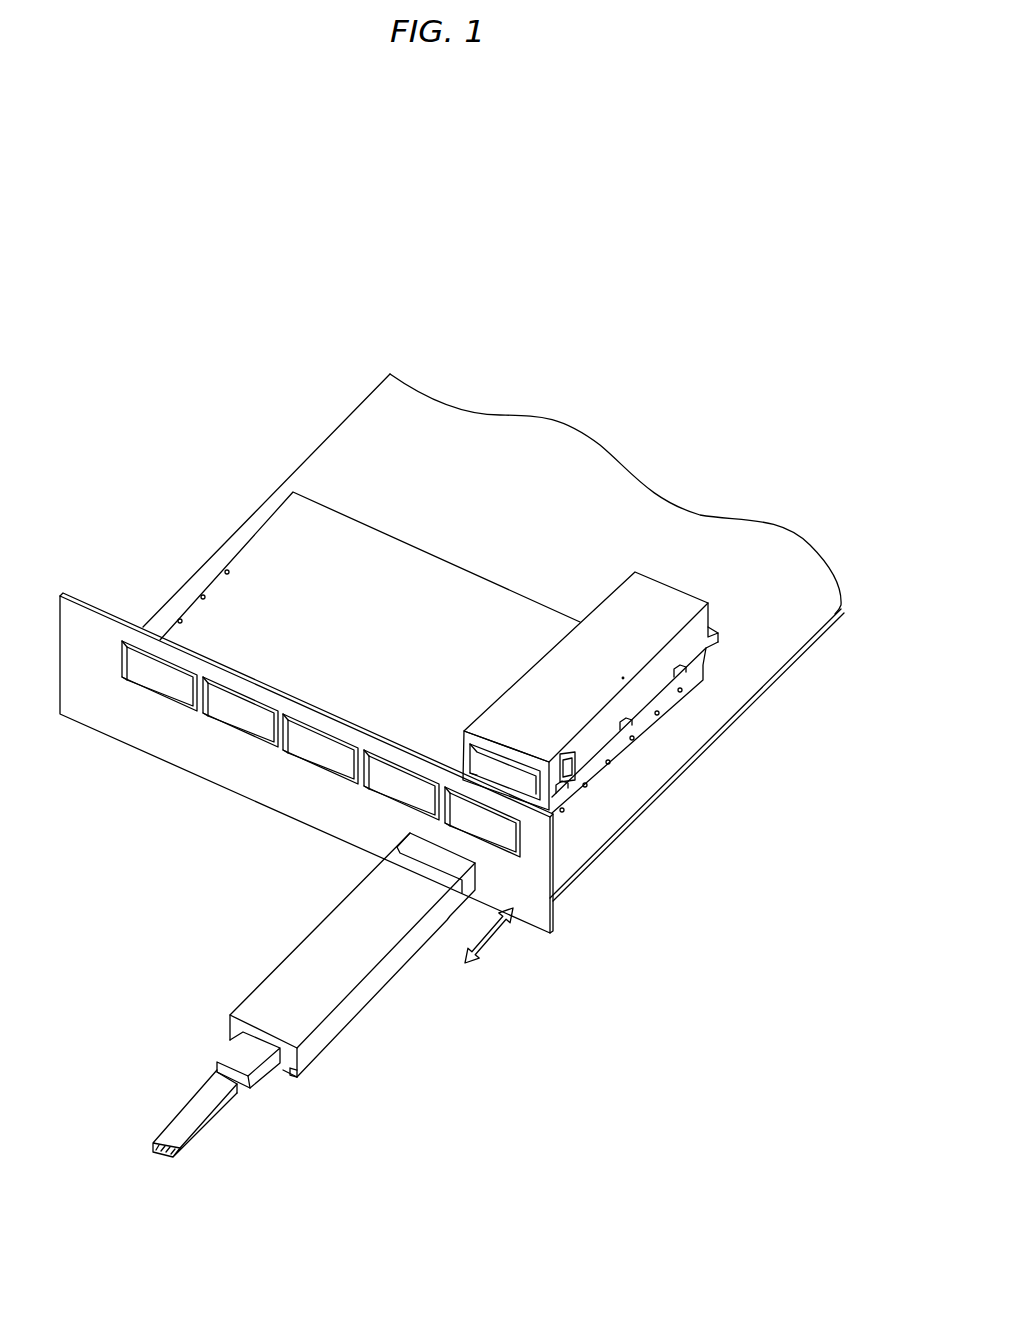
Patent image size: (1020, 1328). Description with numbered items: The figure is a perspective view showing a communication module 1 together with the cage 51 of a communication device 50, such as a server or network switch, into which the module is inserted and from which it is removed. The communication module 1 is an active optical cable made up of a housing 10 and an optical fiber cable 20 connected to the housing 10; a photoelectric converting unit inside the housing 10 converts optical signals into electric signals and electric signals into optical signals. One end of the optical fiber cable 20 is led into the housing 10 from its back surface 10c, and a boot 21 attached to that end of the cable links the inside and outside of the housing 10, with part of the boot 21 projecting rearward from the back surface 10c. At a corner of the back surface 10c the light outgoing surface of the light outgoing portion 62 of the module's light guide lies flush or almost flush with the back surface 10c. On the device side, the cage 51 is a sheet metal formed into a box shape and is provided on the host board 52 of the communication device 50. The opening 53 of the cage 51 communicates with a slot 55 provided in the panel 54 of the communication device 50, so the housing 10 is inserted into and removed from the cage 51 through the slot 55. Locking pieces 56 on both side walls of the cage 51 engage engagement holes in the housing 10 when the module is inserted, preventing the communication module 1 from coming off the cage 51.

The communication module 1 is at (250, 963).
The housing 10 is at (337, 1025).
The back surface 10c is at (237, 1030).
The optical fiber cable 20 is at (188, 1146).
The boot 21 is at (248, 1083).
The light outgoing portion 62 is at (290, 1076).
The communication device 50 is at (279, 383).
The cage 51 is at (706, 655).
The host board 52 is at (570, 447).
The opening 53 is at (507, 832).
The panel 54 is at (168, 637).
The slot 55 is at (530, 788).
The locking pieces 56 is at (578, 762).